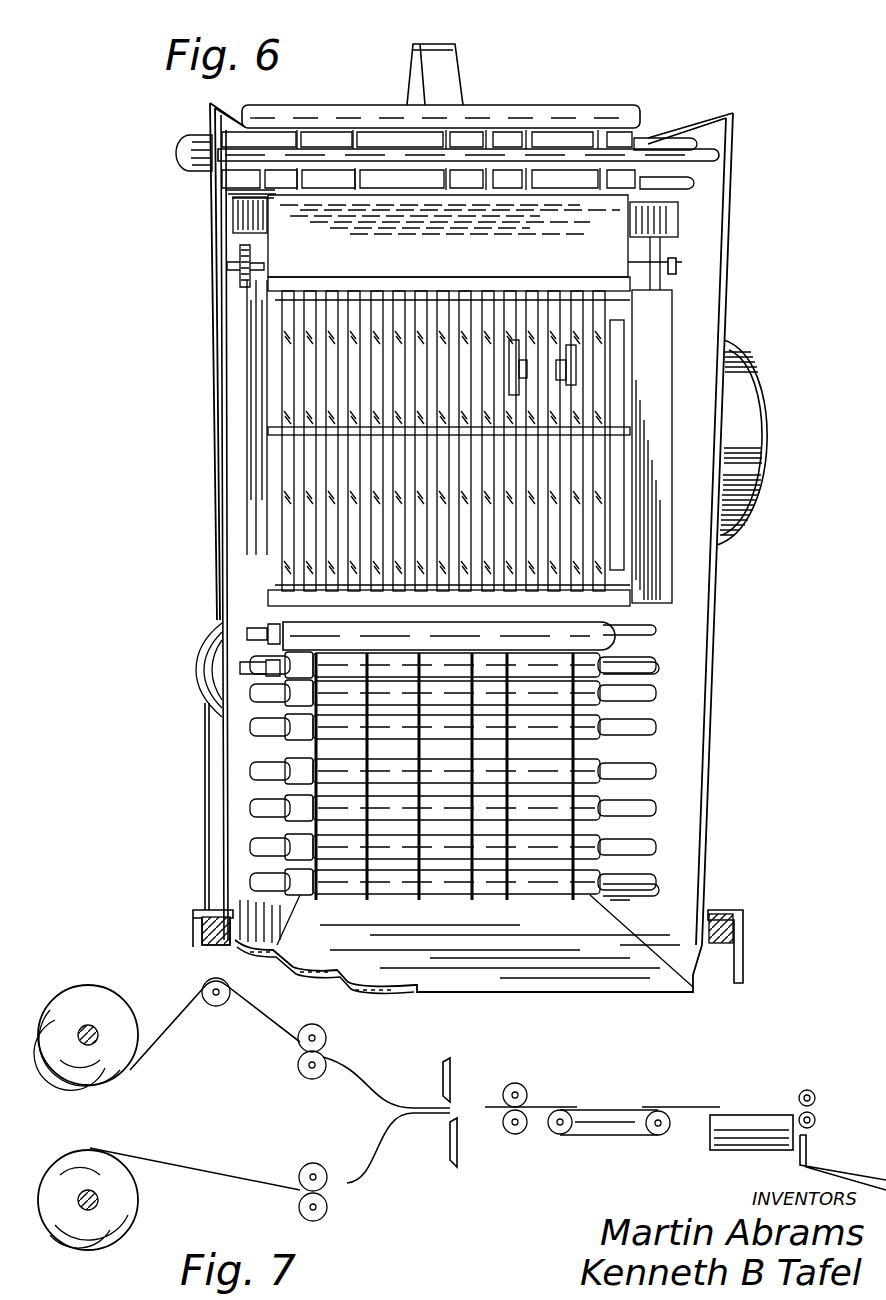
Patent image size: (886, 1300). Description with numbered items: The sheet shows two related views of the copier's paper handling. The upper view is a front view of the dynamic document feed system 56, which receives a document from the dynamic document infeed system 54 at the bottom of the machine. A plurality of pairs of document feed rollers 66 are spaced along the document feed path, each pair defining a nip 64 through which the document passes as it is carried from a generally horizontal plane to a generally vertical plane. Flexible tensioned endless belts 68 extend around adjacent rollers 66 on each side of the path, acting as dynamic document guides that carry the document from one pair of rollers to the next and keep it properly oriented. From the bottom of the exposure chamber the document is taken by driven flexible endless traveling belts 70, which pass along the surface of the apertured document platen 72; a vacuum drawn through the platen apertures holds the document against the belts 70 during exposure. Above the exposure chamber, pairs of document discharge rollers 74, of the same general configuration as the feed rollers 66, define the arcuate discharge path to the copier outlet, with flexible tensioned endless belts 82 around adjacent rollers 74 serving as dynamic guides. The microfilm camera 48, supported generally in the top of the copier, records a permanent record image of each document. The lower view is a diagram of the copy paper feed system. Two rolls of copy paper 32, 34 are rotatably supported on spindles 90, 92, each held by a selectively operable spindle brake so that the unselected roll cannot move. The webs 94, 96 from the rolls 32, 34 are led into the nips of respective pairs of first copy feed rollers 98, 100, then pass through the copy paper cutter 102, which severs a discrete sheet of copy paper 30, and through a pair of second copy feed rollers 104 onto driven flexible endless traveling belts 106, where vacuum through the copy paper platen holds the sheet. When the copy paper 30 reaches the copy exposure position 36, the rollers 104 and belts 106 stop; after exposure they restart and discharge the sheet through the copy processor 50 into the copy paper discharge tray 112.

In FIG. 6, the microfilm camera 48 is at (455, 80).
In FIG. 6, the flexible tensioned endless belts 82 is at (528, 140).
In FIG. 6, the document discharge rollers 74 is at (633, 136).
In FIG. 6, the document platen 72 is at (277, 372).
In FIG. 6, the driven flexible endless traveling belts 70 is at (312, 452).
In FIG. 6, the copy exposure position 36 is at (200, 650).
In FIG. 7, the copy exposure position 36 is at (595, 1130).
In FIG. 6, the document feed rollers 66 is at (598, 680).
In FIG. 6, the dynamic document feed system 56 is at (688, 708).
In FIG. 6, the flexible tensioned endless belts 68 is at (470, 748).
In FIG. 6, the nip 64 is at (550, 894).
In FIG. 6, the dynamic document infeed system 54 is at (612, 888).
In FIG. 7, the roll of copy paper 32 is at (100, 990).
In FIG. 7, the spindle 90 is at (100, 1030).
In FIG. 7, the roll of copy paper 34 is at (92, 1162).
In FIG. 7, the spindle 92 is at (100, 1200).
In FIG. 7, the web 94 is at (180, 1039).
In FIG. 7, the first copy feed rollers 98 is at (328, 1038).
In FIG. 7, the web 96 is at (260, 1189).
In FIG. 7, the first copy feed rollers 100 is at (328, 1178).
In FIG. 7, the copy paper cutter 102 is at (450, 1078).
In FIG. 7, the second copy feed rollers 104 is at (522, 1088).
In FIG. 7, the copy paper 30 is at (535, 1110).
In FIG. 7, the driven flexible endless traveling belts 106 is at (615, 1138).
In FIG. 7, the copy processor 50 is at (720, 1150).
In FIG. 7, the copy paper discharge tray 112 is at (805, 1165).